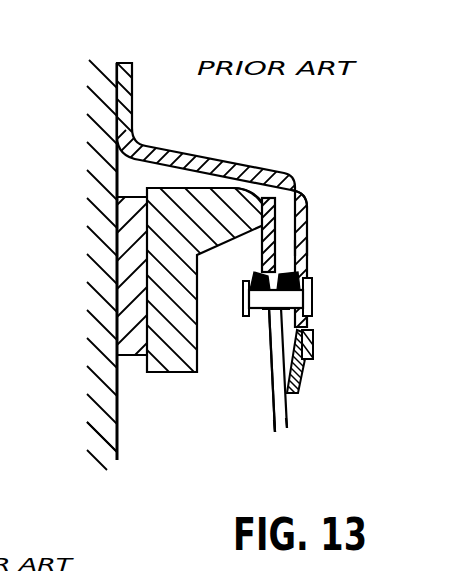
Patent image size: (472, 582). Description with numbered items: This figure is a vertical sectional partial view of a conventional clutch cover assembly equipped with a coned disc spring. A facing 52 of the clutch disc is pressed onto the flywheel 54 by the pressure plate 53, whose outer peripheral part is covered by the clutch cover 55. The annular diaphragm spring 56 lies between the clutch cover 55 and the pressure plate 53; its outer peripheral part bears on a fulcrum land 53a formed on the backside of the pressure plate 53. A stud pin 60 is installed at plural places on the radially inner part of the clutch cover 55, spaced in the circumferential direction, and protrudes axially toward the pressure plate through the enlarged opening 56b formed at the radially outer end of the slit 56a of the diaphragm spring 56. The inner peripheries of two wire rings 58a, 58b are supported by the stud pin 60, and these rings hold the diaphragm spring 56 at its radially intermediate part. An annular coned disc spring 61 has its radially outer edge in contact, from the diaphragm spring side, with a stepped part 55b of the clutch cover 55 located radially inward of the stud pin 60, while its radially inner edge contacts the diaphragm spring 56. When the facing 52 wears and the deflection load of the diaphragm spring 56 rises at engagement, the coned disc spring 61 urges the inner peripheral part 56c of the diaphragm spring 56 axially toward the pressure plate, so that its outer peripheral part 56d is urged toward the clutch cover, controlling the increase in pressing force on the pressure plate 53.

The facing 52 is at (130, 287).
The pressure plate 53 is at (167, 363).
The fulcrum land 53a is at (190, 190).
The flywheel 54 is at (97, 450).
The clutch cover 55 is at (228, 163).
The stepped part 55b is at (308, 338).
The diaphragm spring 56 is at (290, 418).
The slit 56a is at (273, 367).
The enlarged opening 56b is at (272, 309).
The inner peripheral part of the diaphragm spring 56c is at (272, 428).
The outer peripheral part of the diaphragm spring 56d is at (307, 190).
The wire ring 58a is at (300, 245).
The wire ring 58b is at (262, 282).
The stud pin 60 is at (306, 297).
The coned disc spring 61 is at (298, 374).